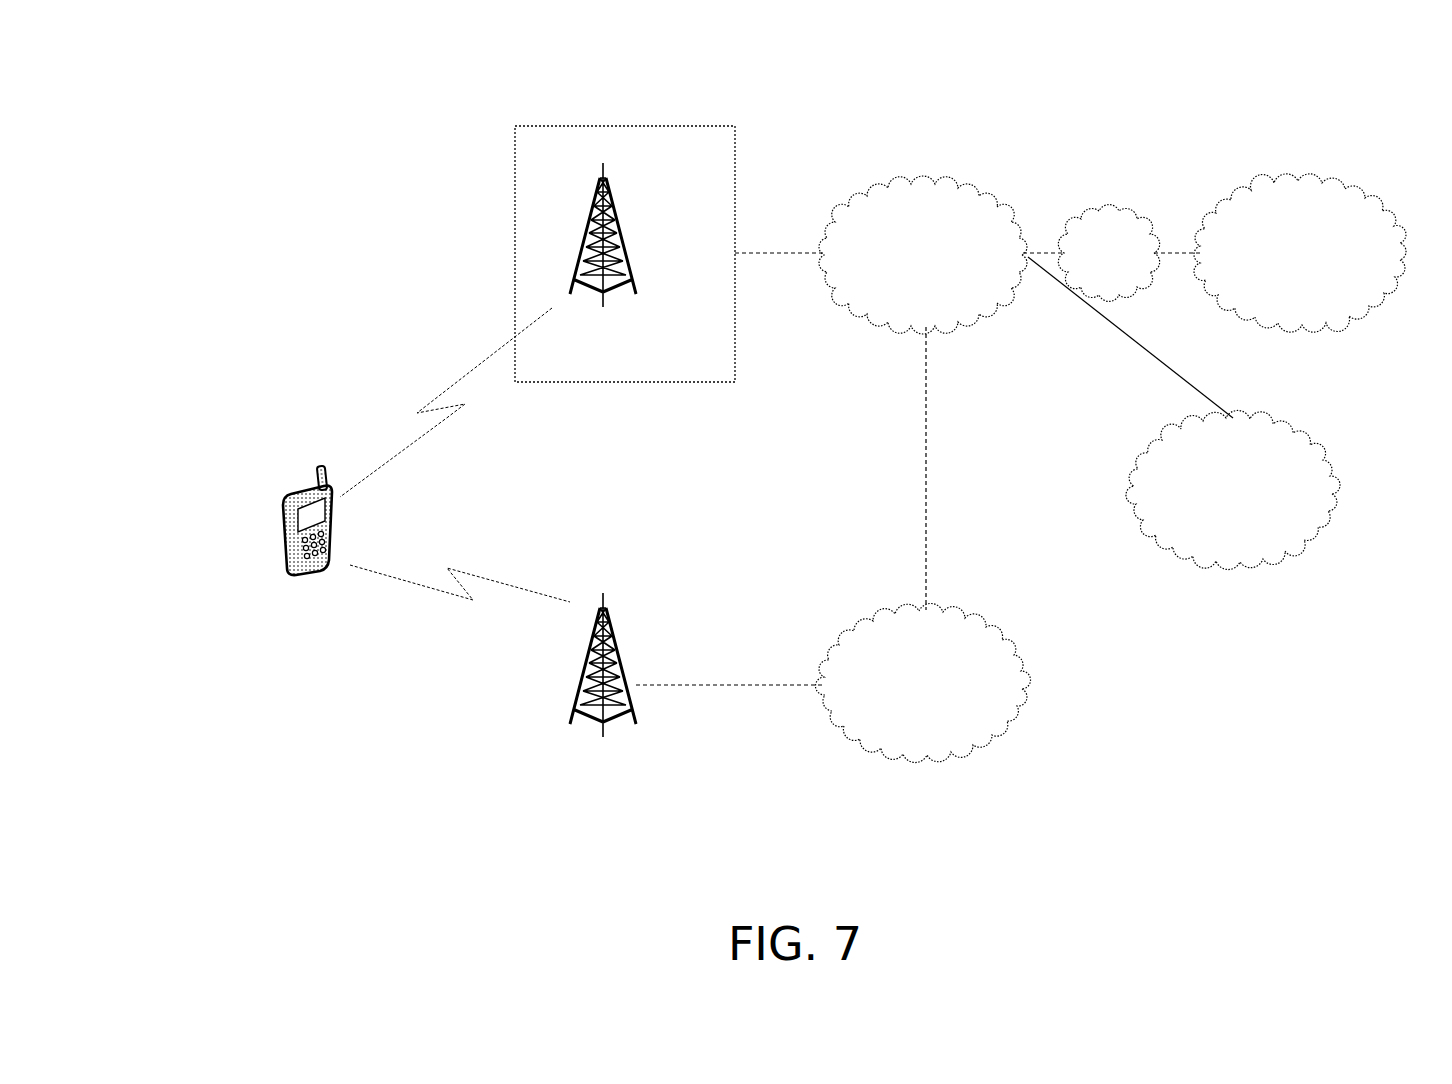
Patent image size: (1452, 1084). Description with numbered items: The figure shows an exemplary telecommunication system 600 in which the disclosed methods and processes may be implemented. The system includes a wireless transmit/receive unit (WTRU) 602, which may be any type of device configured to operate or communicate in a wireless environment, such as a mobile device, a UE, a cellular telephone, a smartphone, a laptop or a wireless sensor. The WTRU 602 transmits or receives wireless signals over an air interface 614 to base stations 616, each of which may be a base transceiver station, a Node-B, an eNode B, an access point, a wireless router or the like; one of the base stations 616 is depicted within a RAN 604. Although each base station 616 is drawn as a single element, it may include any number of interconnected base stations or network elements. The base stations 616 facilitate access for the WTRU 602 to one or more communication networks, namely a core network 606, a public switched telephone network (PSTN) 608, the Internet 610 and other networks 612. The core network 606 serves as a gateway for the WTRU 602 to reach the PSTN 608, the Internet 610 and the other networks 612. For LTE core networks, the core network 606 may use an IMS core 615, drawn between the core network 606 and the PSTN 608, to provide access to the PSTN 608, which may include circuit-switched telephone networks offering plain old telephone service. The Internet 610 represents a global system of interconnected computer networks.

The telecommunication system 600 is at (1199, 52).
The wireless transmit/receive unit 602 is at (280, 510).
The RAN 604 is at (625, 254).
The core network 606 is at (923, 255).
The public switched telephone network 608 is at (1300, 253).
The Internet 610 is at (922, 682).
The other networks 612 is at (1233, 489).
The air interface 614 is at (448, 417).
The IMS core 615 is at (1108, 253).
The base station 616 is at (606, 305).